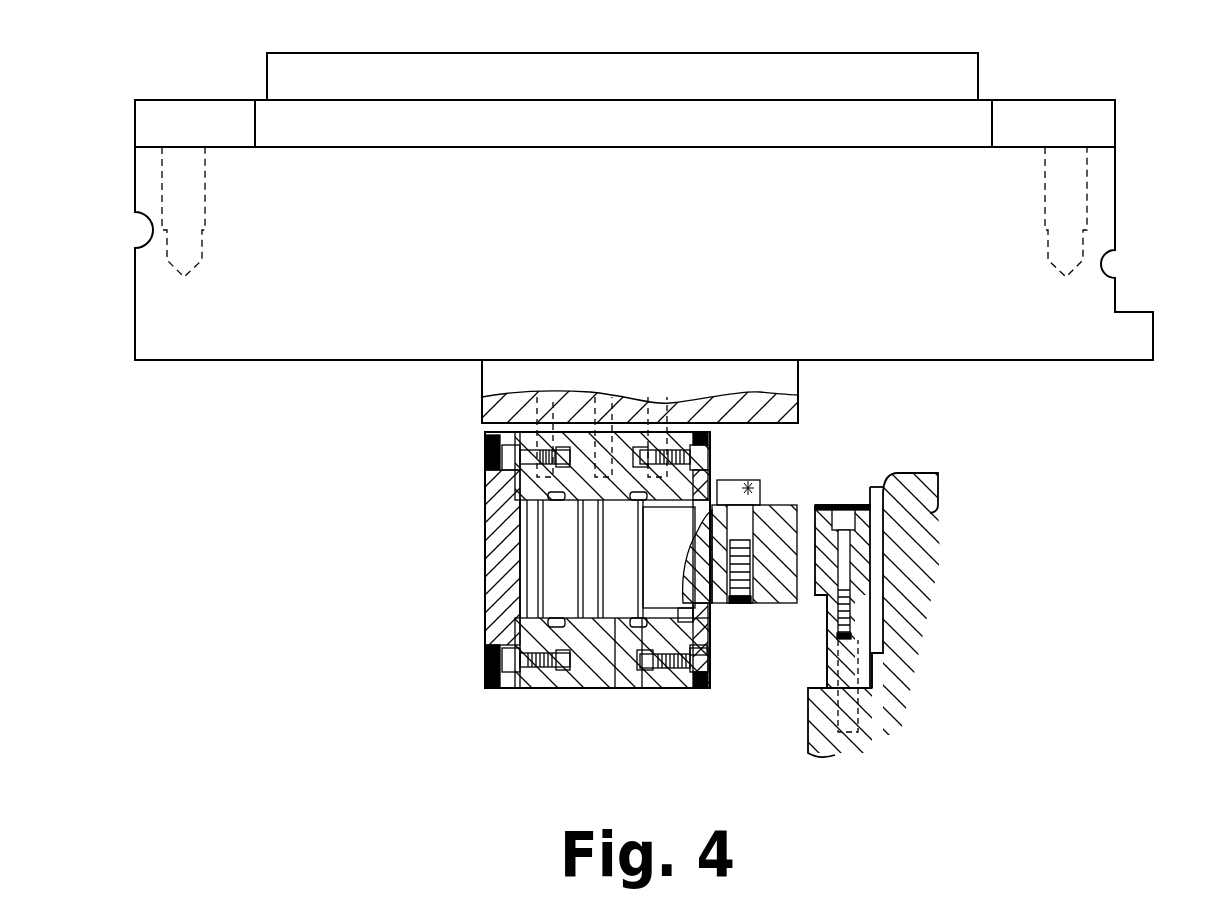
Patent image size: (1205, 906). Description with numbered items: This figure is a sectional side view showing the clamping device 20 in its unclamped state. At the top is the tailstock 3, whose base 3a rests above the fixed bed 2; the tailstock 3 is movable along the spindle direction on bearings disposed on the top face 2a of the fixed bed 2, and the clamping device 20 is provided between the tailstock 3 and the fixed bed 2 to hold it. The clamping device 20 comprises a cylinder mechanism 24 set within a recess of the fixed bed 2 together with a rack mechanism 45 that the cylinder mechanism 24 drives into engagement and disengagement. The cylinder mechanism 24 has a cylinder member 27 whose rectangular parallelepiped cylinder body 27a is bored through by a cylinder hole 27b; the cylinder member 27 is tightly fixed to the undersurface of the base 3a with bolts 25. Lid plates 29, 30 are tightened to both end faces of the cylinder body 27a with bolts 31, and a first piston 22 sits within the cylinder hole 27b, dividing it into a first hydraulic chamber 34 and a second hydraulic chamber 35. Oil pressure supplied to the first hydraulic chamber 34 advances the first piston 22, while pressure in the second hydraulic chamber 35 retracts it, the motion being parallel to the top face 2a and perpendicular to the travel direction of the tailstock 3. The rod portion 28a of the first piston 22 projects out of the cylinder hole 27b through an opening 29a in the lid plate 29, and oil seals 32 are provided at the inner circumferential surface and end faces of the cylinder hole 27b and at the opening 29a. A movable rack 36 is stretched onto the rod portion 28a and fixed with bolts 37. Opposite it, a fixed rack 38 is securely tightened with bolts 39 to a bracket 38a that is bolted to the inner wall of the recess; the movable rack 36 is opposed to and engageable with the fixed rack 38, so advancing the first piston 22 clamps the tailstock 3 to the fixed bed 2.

The fixed bed 2 is at (936, 470).
The top face of the fixed bed 2a is at (907, 472).
The tailstock 3 is at (1080, 92).
The base 3a is at (1117, 185).
The clamping device 20 is at (413, 458).
The first piston 22 is at (567, 689).
The cylinder mechanism 24 is at (482, 553).
The bolts 25 is at (630, 395).
The cylinder member 27 is at (600, 697).
The cylinder body 27a is at (642, 689).
The cylinder hole 27b is at (620, 689).
The rod portion 28a is at (762, 602).
The lid plate 29 is at (712, 640).
The opening 29a is at (712, 605).
The lid plate 30 is at (520, 600).
The bolts 31 is at (485, 453).
The oil seals 32 is at (643, 610).
The first hydraulic chamber 34 is at (517, 535).
The second hydraulic chamber 35 is at (666, 650).
The movable rack 36 is at (799, 507).
The bolts 37 is at (750, 486).
The fixed rack 38 is at (828, 505).
The bracket 38a is at (872, 628).
The bolts 39 is at (852, 553).
The rack mechanism 45 is at (864, 462).